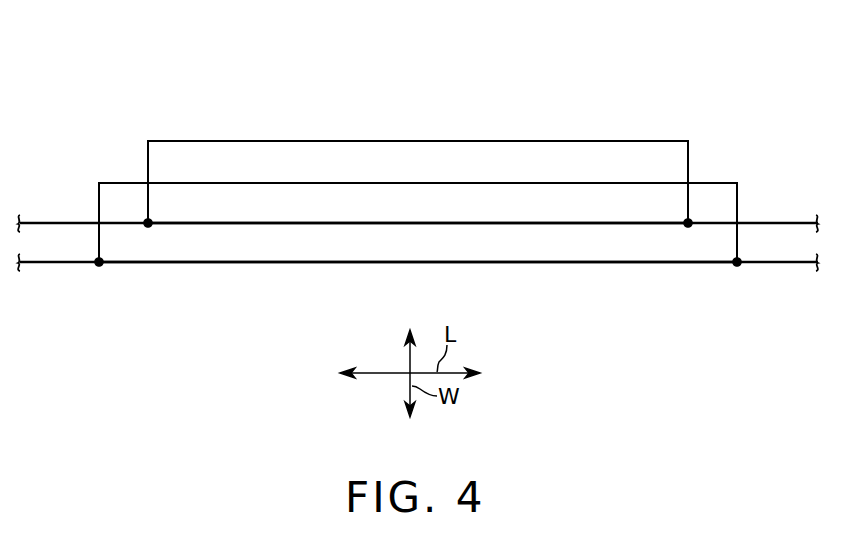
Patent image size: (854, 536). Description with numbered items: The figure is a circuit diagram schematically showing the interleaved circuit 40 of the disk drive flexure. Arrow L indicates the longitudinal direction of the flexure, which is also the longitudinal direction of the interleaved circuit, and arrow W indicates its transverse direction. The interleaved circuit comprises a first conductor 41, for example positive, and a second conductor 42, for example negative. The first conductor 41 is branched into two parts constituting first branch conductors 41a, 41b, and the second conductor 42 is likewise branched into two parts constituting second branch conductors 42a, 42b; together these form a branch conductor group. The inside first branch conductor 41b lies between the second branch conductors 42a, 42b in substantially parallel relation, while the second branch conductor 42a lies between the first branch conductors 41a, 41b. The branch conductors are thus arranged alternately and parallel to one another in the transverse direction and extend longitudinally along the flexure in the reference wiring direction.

The wiring structure 40 is at (433, 97).
The first conductor 41 is at (58, 221).
The second conductor 42 is at (61, 265).
The first branch conductor 41a is at (246, 141).
The second branch conductor 42a is at (463, 182).
The first branch conductor 41b is at (246, 222).
The second branch conductor 42b is at (463, 261).